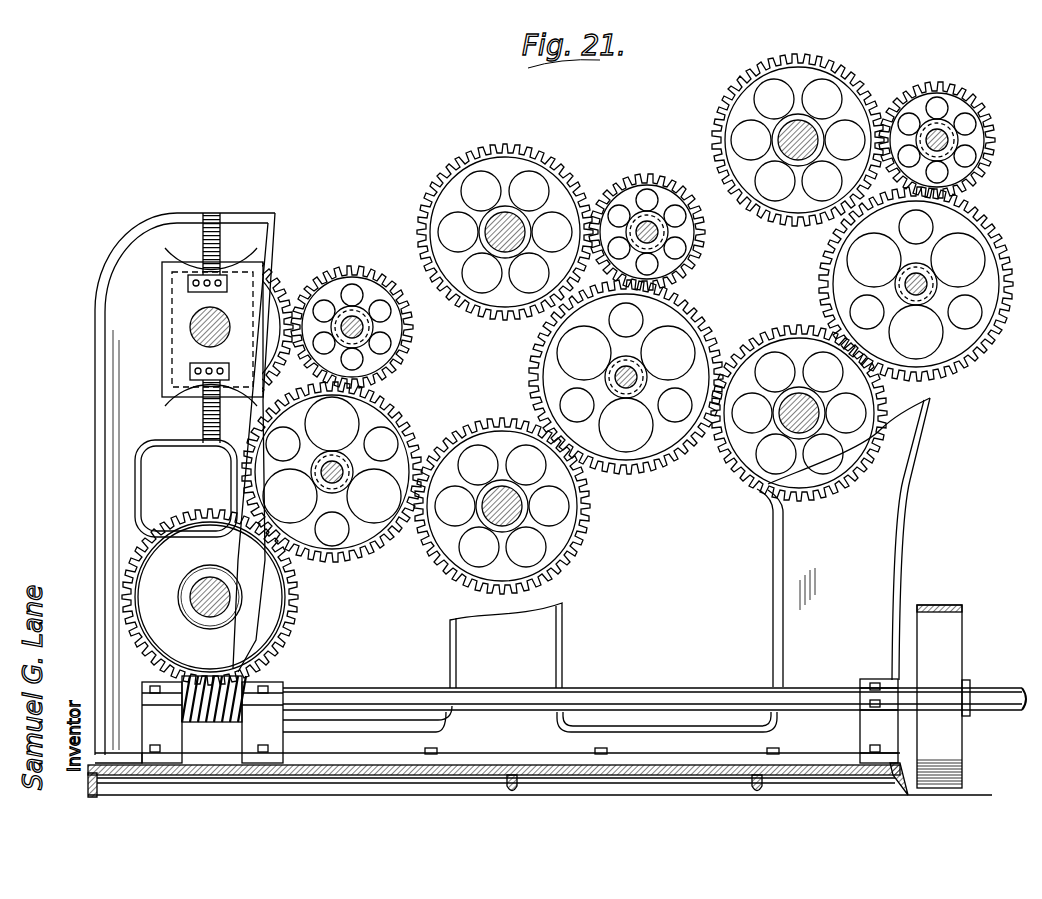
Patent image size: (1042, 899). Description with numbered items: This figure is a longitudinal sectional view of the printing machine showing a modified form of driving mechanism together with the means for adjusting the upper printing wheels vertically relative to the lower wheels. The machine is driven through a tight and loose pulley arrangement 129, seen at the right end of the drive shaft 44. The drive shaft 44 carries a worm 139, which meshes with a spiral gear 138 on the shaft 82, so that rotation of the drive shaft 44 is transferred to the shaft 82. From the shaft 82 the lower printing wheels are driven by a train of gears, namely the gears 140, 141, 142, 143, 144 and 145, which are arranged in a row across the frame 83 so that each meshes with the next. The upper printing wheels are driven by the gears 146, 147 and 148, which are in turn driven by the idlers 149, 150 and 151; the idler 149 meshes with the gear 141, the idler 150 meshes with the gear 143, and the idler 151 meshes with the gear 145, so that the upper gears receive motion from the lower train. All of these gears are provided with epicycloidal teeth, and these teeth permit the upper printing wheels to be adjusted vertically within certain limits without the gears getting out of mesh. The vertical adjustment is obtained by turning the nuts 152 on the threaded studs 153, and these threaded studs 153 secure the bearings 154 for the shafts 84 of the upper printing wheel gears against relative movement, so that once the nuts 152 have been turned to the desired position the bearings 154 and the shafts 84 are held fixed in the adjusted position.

The drive shaft 44 is at (392, 670).
The shaft 82 is at (190, 597).
The frame 83 is at (97, 463).
The shaft 84 is at (200, 330).
The tight and loose pulley arrangement 129 is at (970, 600).
The spiral gear 138 is at (130, 567).
The worm 139 is at (240, 683).
The gear 140 is at (297, 613).
The gear 141 is at (373, 553).
The gear 142 is at (570, 560).
The gear 143 is at (650, 470).
The gear 144 is at (767, 485).
The gear 145 is at (967, 367).
The gear 146 is at (282, 273).
The gear 147 is at (530, 133).
The gear 148 is at (847, 77).
The idler 149 is at (356, 254).
The idler 150 is at (634, 168).
The idler 151 is at (952, 88).
The nut 152 is at (188, 287).
The threaded stud 153 is at (163, 257).
The bearing 154 is at (180, 307).